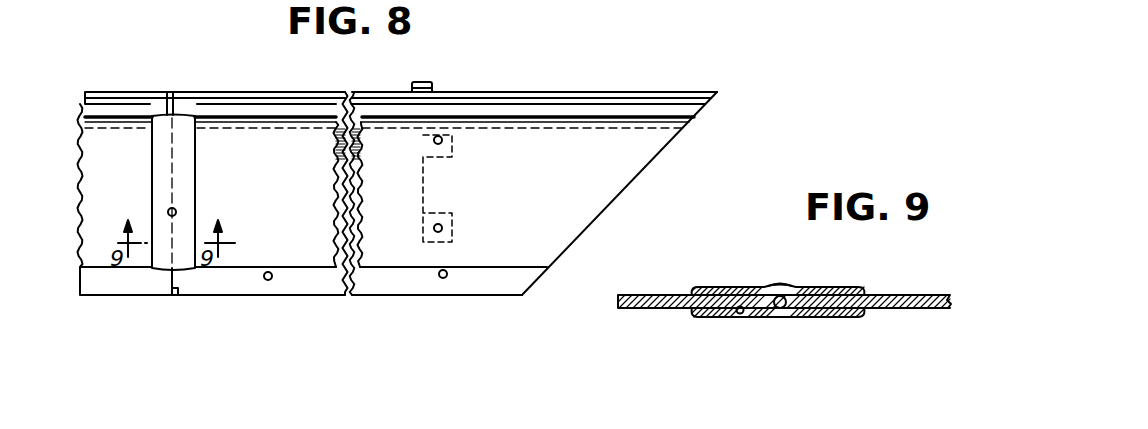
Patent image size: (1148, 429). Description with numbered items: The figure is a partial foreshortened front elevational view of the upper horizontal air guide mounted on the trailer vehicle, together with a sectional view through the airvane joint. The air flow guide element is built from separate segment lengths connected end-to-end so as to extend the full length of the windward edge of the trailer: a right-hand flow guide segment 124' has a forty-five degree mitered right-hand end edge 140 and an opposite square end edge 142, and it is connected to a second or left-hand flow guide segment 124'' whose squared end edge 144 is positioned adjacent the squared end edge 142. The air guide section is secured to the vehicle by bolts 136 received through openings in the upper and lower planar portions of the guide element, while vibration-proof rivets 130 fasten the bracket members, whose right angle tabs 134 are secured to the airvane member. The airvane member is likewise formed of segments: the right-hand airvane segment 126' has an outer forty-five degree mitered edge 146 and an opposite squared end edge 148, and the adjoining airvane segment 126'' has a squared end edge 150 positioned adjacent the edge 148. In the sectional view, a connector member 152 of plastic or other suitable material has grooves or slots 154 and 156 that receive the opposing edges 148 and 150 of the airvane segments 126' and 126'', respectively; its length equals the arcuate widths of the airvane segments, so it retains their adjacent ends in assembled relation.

In FIG. 8, the right-hand flow guide segment 124' is at (501, 91).
In FIG. 8, the left-hand flow guide segment 124'' is at (215, 86).
In FIG. 8, the right-hand airvane segment 126' is at (391, 305).
In FIG. 9, the right-hand airvane segment 126' is at (871, 328).
In FIG. 8, the airvane segment 126'' is at (204, 224).
In FIG. 9, the airvane segment 126'' is at (699, 333).
In FIG. 8, the vibration-proof rivets 130 is at (442, 136).
In FIG. 8, the right angle tabs 134 is at (448, 210).
In FIG. 8, the bolts 136 is at (424, 83).
In FIG. 8, the mitered right-hand end edge 140 is at (712, 98).
In FIG. 8, the square end edge 142 is at (172, 112).
In FIG. 8, the squared end edge 144 is at (176, 294).
In FIG. 8, the mitered edge 146 is at (608, 207).
In FIG. 8, the squared end edge 148 is at (177, 210).
In FIG. 9, the squared end edge 148 is at (782, 290).
In FIG. 8, the squared end edge 150 is at (172, 177).
In FIG. 9, the squared end edge 150 is at (776, 289).
In FIG. 9, the connector member 152 is at (773, 317).
In FIG. 9, the groove 154 is at (840, 317).
In FIG. 9, the groove 156 is at (740, 313).